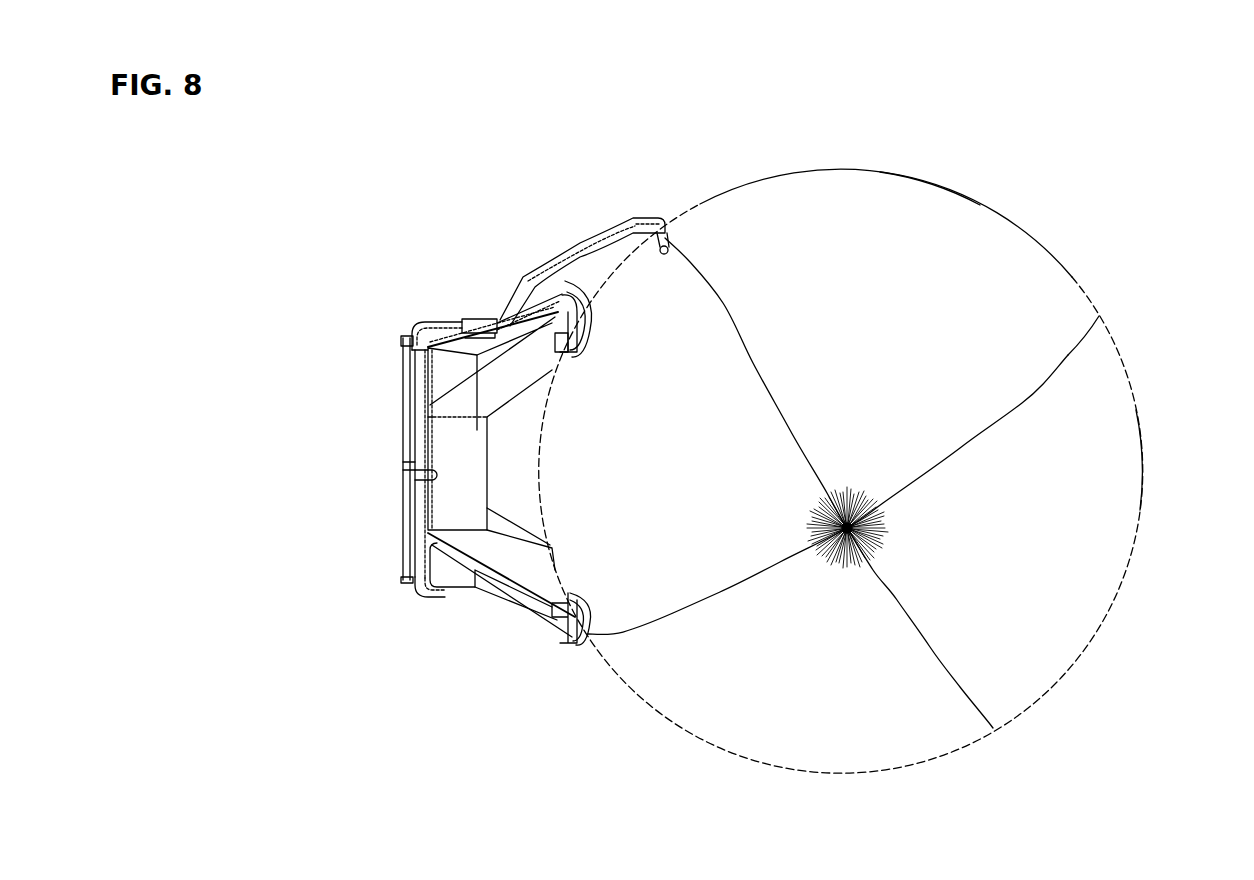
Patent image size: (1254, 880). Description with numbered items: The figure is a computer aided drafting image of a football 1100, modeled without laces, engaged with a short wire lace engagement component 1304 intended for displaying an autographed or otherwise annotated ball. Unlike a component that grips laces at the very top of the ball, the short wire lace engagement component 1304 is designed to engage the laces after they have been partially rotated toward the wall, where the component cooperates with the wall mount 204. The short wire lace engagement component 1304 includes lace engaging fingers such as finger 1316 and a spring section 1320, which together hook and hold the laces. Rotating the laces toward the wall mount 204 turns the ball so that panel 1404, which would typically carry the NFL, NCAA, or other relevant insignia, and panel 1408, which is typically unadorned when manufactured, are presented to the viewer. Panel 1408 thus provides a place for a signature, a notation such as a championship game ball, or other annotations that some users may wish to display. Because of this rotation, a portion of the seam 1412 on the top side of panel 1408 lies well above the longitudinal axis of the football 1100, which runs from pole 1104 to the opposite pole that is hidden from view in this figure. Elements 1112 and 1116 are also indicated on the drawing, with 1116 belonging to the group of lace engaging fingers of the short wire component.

The wall mount 204 is at (448, 503).
The short wire lace engagement component 1304 is at (523, 277).
The spring section 1320 is at (583, 237).
The lace engaging finger 1316 is at (668, 240).
The football 1100 is at (847, 277).
The pole 1104 is at (847, 522).
The horizontal meridian curve 1112 is at (670, 617).
The vertical meridian curve 1116 is at (925, 725).
The panel 1404 is at (930, 215).
The panel 1408 is at (1082, 437).
The seam 1412 is at (1100, 320).